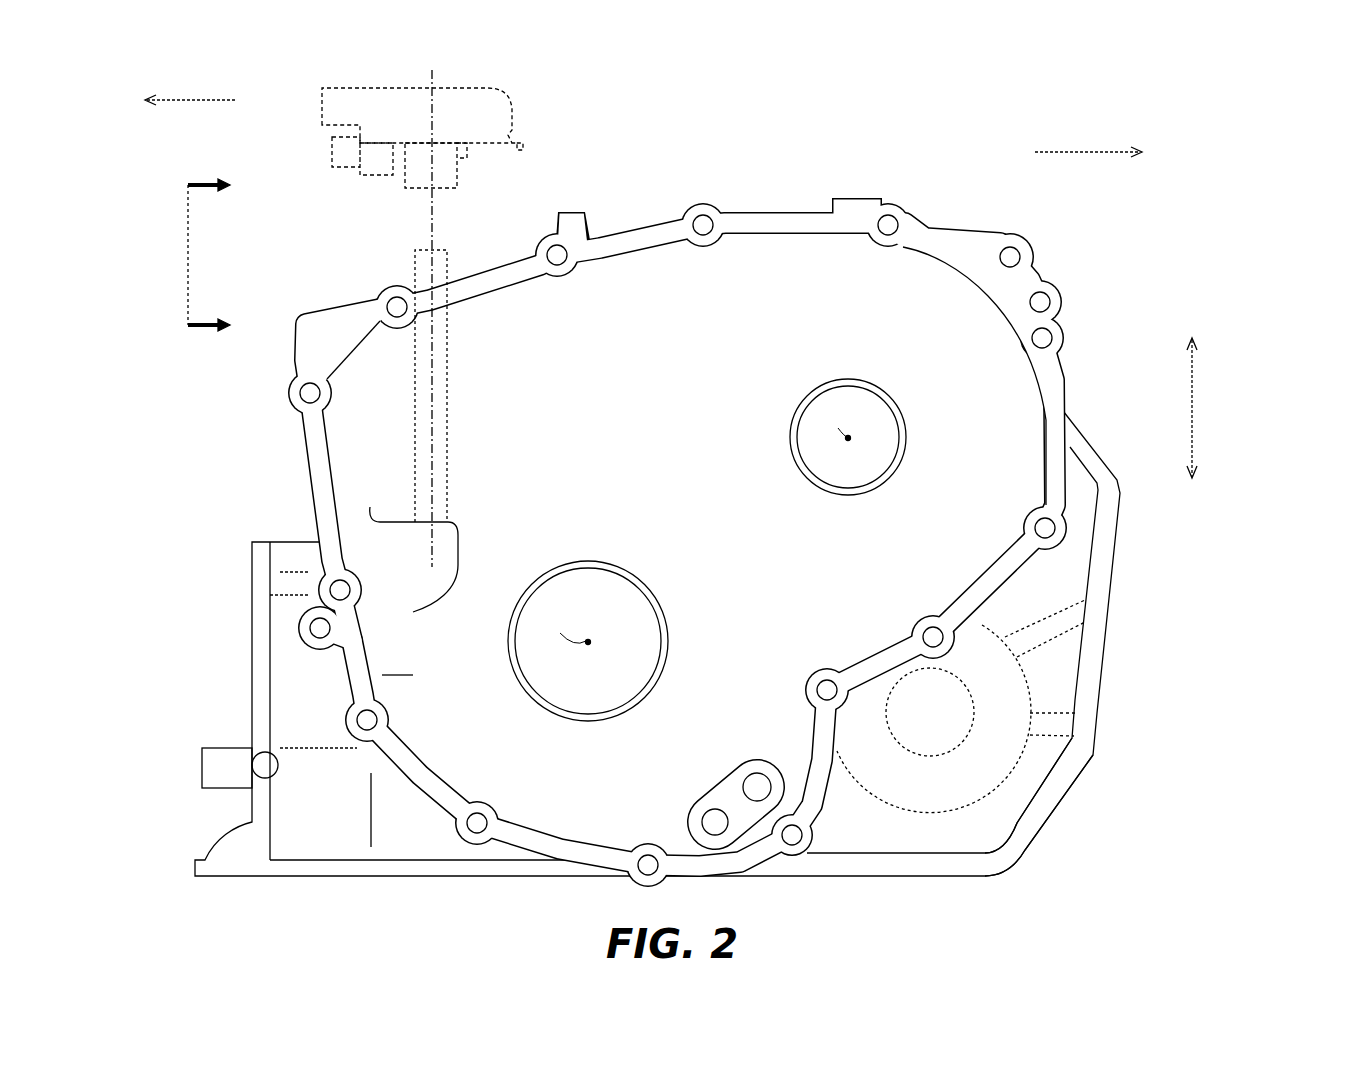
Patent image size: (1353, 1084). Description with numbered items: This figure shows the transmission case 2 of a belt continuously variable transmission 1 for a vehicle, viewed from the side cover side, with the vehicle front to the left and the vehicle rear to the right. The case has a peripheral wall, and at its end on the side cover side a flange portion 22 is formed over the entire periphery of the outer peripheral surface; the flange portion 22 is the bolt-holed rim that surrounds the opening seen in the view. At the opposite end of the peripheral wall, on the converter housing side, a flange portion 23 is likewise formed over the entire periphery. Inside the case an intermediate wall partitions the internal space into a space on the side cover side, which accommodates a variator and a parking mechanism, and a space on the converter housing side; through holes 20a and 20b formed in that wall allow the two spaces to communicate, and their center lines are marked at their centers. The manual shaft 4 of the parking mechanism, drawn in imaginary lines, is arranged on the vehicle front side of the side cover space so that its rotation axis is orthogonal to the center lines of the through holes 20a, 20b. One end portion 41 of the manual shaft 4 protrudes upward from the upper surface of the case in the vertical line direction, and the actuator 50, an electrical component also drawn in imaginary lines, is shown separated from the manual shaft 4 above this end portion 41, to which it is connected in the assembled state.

The belt continuously variable transmission 1 is at (706, 462).
The transmission case 2 is at (709, 641).
The manual shaft 4 is at (448, 341).
The through hole 20a is at (645, 650).
The through hole 20b is at (892, 430).
The flange portion 22 is at (957, 245).
The flange portion 23 is at (1055, 812).
The one end portion 41 is at (447, 252).
The actuator 50 is at (306, 89).